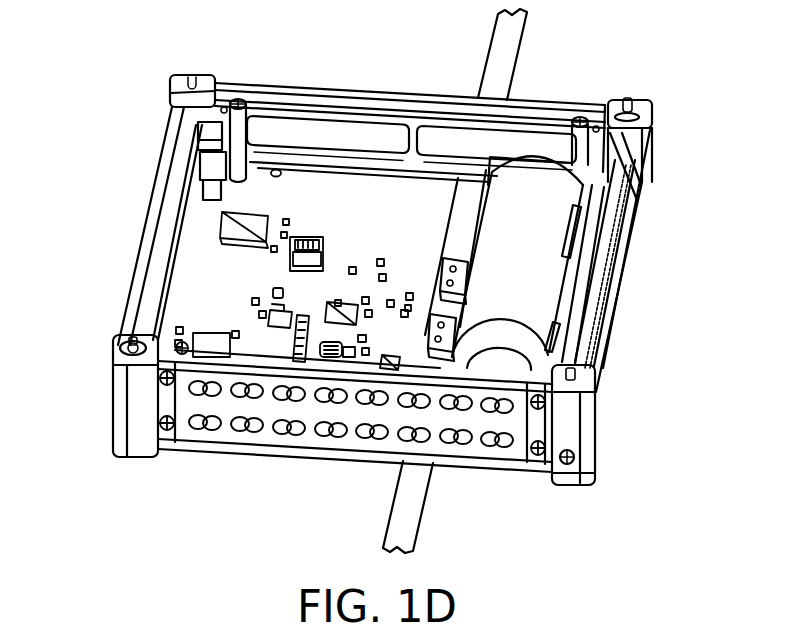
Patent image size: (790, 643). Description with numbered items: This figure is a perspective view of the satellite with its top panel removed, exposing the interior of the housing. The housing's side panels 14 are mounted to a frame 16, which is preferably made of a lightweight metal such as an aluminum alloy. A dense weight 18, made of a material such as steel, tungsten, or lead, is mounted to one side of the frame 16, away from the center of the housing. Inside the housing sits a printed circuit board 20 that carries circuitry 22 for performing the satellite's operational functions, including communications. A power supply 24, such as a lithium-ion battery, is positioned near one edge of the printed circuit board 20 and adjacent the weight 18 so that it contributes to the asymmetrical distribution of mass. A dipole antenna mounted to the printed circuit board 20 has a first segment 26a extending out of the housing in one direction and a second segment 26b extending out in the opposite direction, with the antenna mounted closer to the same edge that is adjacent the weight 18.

The side panel 14 is at (240, 441).
The frame 16 is at (597, 403).
The dense weight 18 is at (574, 247).
The printed circuit board 20 is at (388, 197).
The circuitry 22 is at (270, 297).
The power supply 24 is at (527, 302).
The first segment 26a is at (503, 68).
The second segment 26b is at (410, 507).